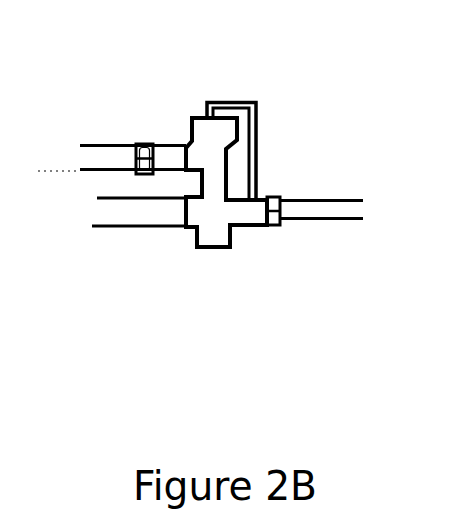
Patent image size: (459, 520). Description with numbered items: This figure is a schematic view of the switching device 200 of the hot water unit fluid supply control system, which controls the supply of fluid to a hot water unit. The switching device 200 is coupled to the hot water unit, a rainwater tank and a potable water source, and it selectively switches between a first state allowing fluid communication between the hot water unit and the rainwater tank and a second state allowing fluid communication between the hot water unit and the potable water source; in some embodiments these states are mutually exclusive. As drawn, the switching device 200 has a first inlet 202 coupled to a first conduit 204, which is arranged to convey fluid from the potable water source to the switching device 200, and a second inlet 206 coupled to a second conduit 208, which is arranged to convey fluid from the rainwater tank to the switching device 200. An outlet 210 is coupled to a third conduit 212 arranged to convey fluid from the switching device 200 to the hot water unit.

The switching device 200 is at (183, 116).
The first inlet 202 is at (151, 144).
The first conduit 204 is at (89, 147).
The second inlet 206 is at (269, 228).
The second conduit 208 is at (330, 200).
The outlet 210 is at (186, 229).
The third conduit 212 is at (137, 229).